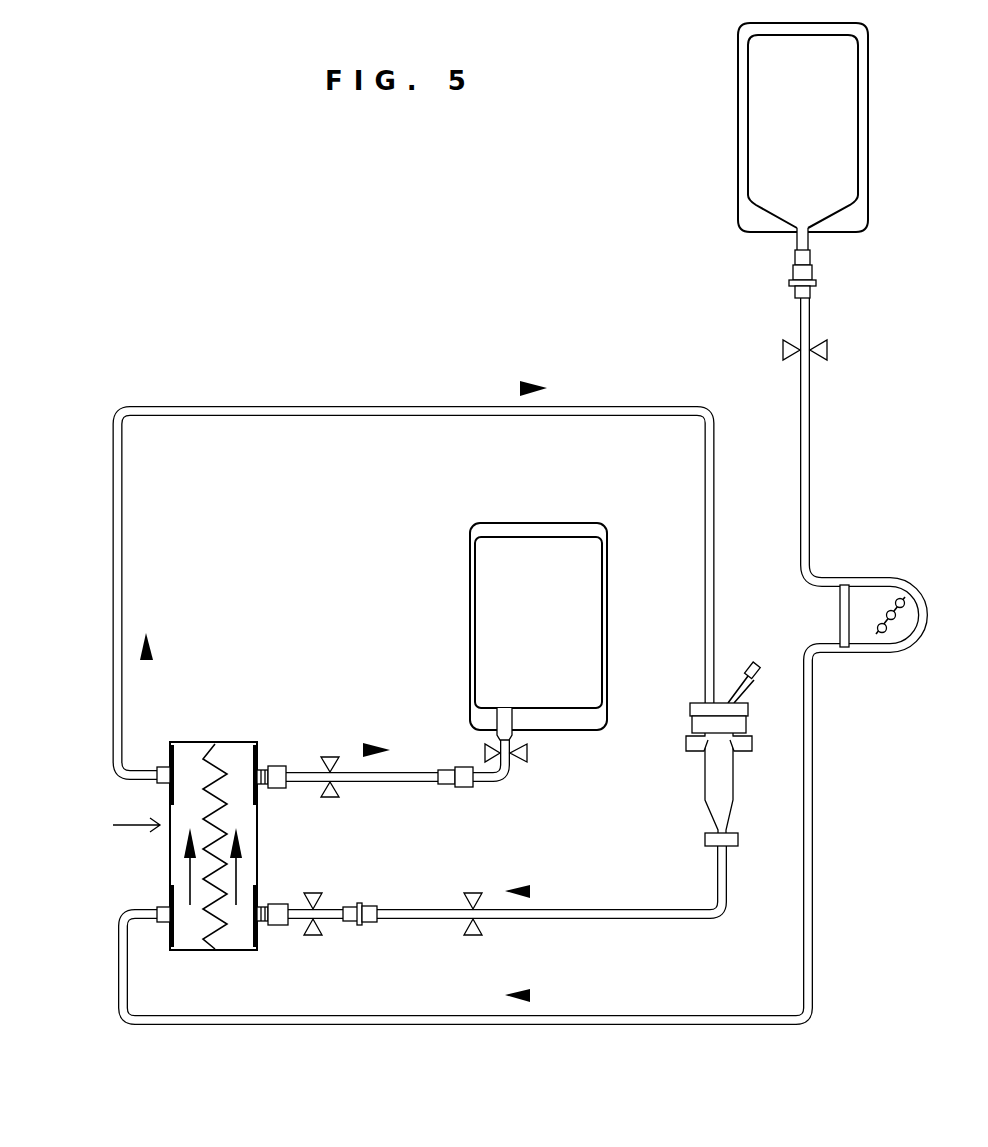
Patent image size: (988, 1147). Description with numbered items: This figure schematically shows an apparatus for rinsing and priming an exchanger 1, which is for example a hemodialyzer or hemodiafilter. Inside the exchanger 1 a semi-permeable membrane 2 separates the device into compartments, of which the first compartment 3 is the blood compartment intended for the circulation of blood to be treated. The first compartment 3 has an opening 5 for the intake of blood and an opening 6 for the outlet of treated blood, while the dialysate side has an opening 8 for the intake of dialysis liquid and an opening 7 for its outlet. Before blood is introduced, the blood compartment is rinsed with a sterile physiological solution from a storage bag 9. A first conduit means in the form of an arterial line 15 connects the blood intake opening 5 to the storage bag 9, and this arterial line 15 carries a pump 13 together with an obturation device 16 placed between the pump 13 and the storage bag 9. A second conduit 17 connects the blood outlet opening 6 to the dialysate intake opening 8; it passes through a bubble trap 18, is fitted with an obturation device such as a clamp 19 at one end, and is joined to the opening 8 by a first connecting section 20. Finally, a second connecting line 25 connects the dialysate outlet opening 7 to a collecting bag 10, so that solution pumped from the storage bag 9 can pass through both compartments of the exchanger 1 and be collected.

The exchanger 1 is at (136, 814).
The semi-permeable membrane 2 is at (215, 803).
The first compartment 3 is at (178, 867).
The opening 5 is at (162, 930).
The opening 6 is at (163, 765).
The opening 7 is at (280, 770).
The opening 8 is at (278, 928).
The storage bag 9 is at (762, 198).
The collecting bag 10 is at (480, 643).
The pump 13 is at (876, 587).
The arterial line 15 is at (430, 1025).
The obturation device 16 is at (790, 348).
The second conduit 17 is at (280, 407).
The bubble trap 18 is at (706, 795).
The clamp 19 is at (467, 937).
The first connecting section 20 is at (350, 1000).
The second connecting line 25 is at (433, 841).